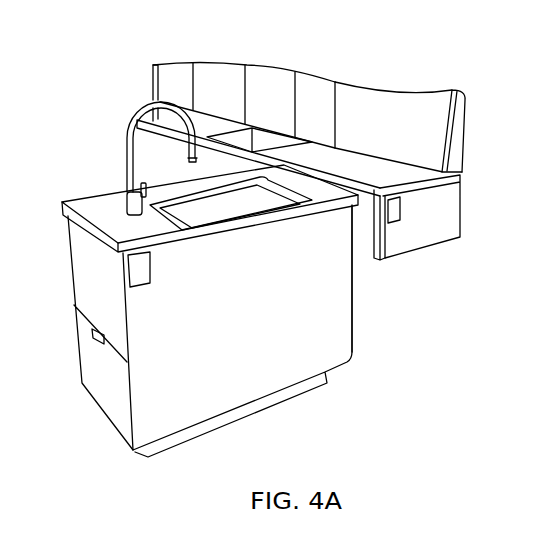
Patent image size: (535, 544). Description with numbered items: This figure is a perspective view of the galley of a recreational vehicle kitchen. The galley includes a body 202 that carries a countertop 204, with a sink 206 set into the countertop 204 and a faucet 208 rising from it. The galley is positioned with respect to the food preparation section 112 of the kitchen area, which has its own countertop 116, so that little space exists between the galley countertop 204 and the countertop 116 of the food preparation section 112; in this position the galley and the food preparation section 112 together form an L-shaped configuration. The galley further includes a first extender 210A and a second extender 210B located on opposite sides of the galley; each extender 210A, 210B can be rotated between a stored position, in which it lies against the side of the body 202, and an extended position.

The food preparation section 112 is at (407, 177).
The countertop 116 is at (372, 175).
The body 202 is at (343, 321).
The countertop 204 is at (92, 203).
The sink 206 is at (242, 195).
The faucet 208 is at (127, 128).
The first extender 210A is at (85, 283).
The second extender 210B is at (353, 277).